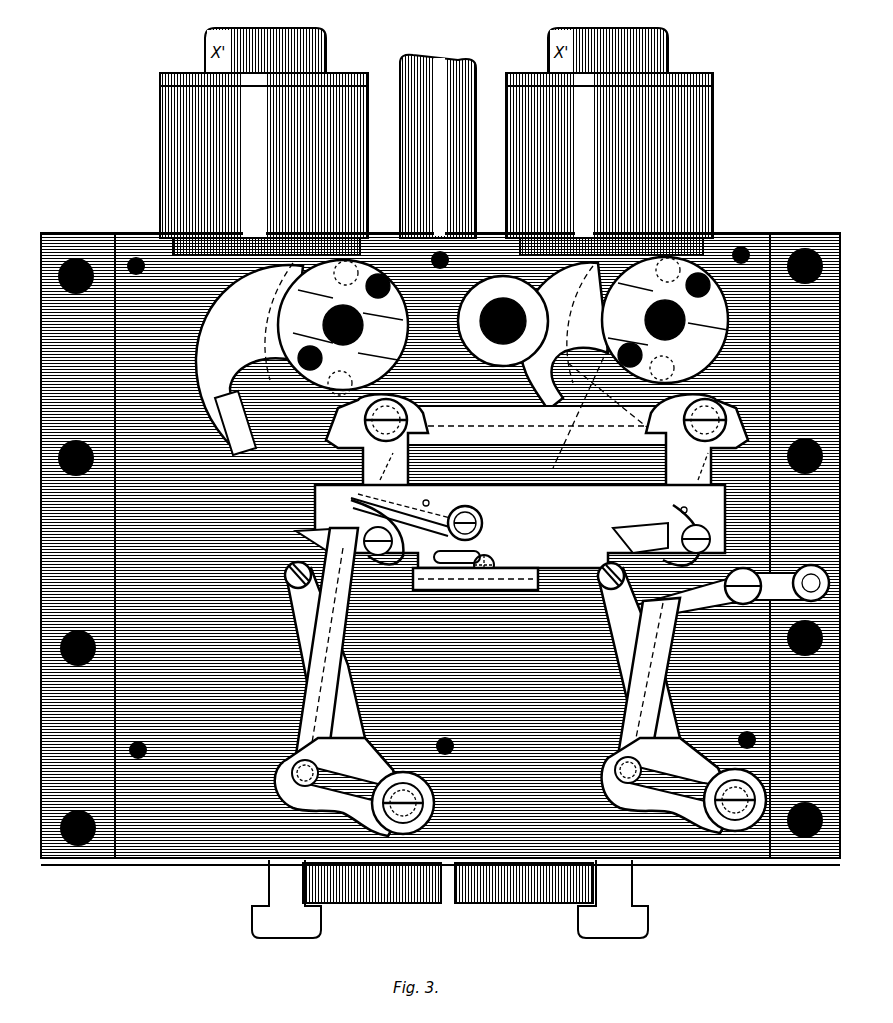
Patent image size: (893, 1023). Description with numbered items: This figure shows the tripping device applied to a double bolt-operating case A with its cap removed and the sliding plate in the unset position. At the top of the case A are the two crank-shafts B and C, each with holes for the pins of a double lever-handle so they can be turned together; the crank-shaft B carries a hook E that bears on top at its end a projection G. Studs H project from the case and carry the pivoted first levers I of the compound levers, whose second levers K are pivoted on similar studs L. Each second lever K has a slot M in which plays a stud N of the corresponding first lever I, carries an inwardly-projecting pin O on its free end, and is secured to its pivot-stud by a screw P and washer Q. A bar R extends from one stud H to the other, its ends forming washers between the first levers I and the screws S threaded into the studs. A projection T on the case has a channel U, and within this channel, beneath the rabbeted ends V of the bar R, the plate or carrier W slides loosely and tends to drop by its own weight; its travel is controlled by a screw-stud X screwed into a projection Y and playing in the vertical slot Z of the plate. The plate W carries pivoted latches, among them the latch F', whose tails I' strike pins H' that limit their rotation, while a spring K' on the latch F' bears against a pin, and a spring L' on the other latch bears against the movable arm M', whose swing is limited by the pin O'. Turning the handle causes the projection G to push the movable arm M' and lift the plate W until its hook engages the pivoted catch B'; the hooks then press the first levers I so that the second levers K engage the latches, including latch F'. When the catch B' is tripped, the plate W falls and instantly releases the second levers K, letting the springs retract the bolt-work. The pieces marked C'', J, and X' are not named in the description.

The case A is at (430, 238).
The crank-shaft B is at (343, 327).
The crank-shaft C is at (471, 356).
The link rod C'' is at (731, 592).
The hook E is at (402, 355).
The studs H is at (537, 440).
The screws S is at (545, 420).
The bar R is at (539, 425).
The first levers I is at (487, 650).
The tails of the latches I' is at (600, 408).
The rabbeted projecting ends V is at (545, 466).
The plate or carrier W is at (520, 526).
The spring L' is at (324, 532).
The latch F' is at (640, 538).
The movable arm M' is at (406, 513).
The projection G is at (530, 533).
The pin O' is at (426, 512).
The spring K' is at (671, 510).
The pin J is at (687, 501).
The pins H' is at (731, 530).
The projection Y is at (483, 533).
The screw-stud X is at (485, 555).
The vertical slot Z is at (457, 548).
The channel U is at (413, 563).
The projection T is at (475, 579).
The catch B' is at (660, 610).
The second levers K is at (510, 702).
The slots M is at (505, 787).
The pins O is at (455, 581).
The studs N is at (466, 771).
The washers Q is at (542, 777).
The screws P is at (569, 801).
The studs L is at (609, 807).
The foot X' is at (245, 896).